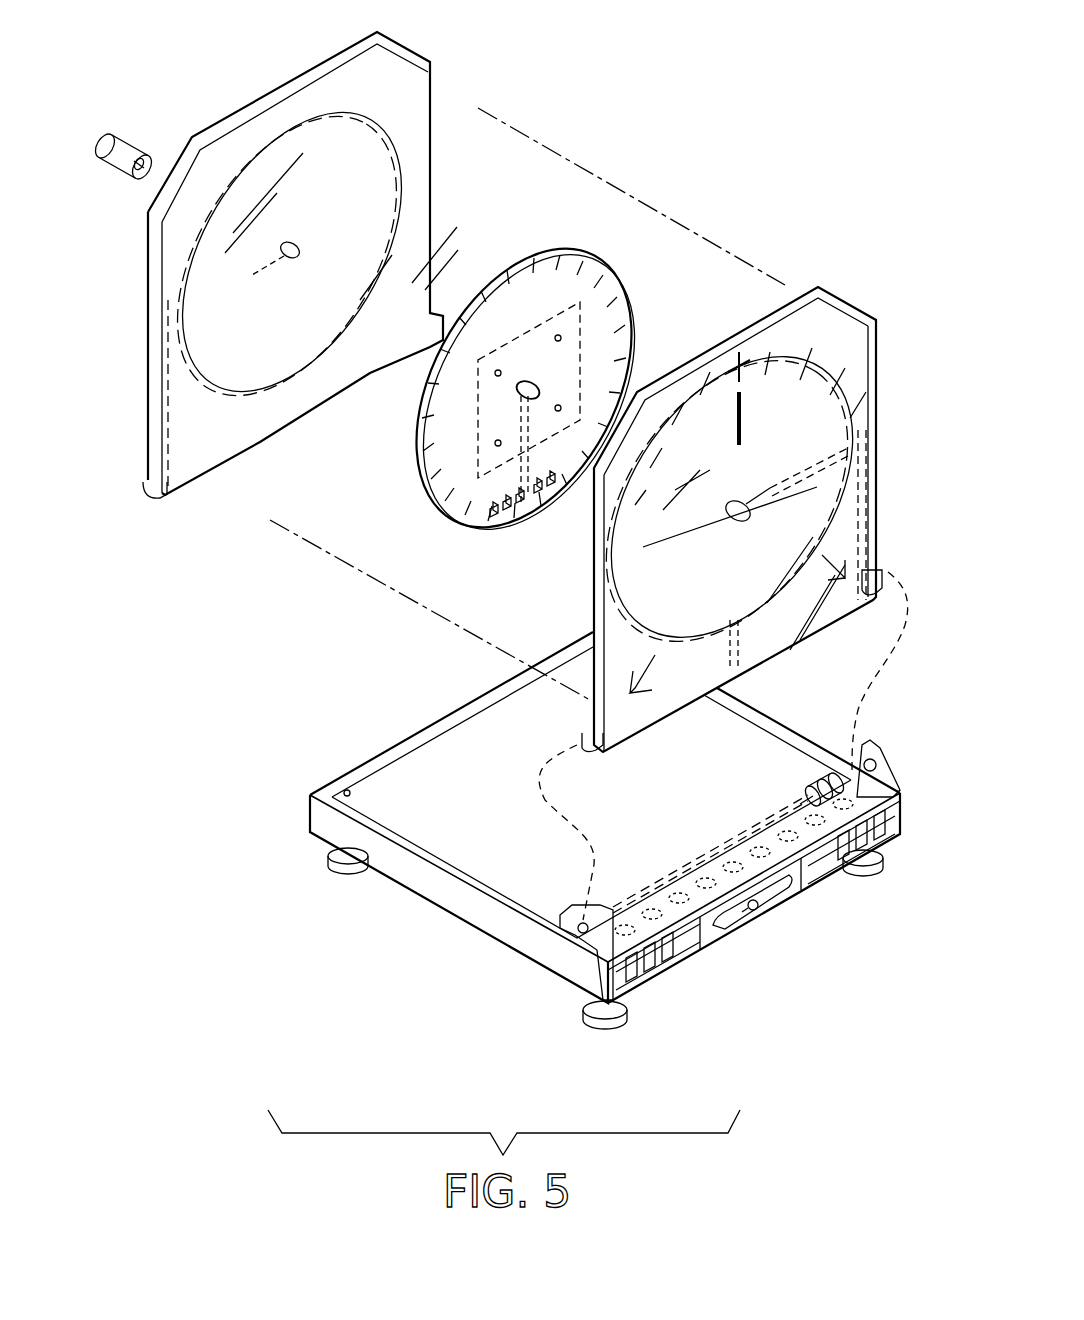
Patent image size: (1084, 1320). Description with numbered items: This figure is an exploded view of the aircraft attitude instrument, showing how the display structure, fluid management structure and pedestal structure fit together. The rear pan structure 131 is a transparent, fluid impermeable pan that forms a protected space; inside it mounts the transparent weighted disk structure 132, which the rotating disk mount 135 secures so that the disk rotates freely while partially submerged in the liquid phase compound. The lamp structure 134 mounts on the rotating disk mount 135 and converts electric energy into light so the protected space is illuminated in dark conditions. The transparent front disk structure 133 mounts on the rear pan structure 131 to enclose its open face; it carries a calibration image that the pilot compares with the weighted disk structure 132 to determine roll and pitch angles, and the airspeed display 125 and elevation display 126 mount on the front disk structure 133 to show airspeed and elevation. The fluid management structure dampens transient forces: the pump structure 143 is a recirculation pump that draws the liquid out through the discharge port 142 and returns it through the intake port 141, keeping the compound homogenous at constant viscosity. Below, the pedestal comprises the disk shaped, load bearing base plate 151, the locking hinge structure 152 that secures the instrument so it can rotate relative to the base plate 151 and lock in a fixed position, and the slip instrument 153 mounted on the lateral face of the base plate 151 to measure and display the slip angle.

The airspeed display 125 is at (680, 947).
The elevation display 126 is at (817, 875).
The rear pan structure 131 is at (400, 102).
The weighted disk structure 132 is at (598, 260).
The front disk structure 133 is at (850, 305).
The lamp structure 134 is at (120, 160).
The rotating disk mount 135 is at (127, 143).
The intake port 141 is at (585, 757).
The discharge port 142 is at (880, 570).
The pump structure 143 is at (590, 932).
The base plate 151 is at (437, 897).
The locking hinge structure 152 is at (888, 760).
The slip instrument 153 is at (760, 903).